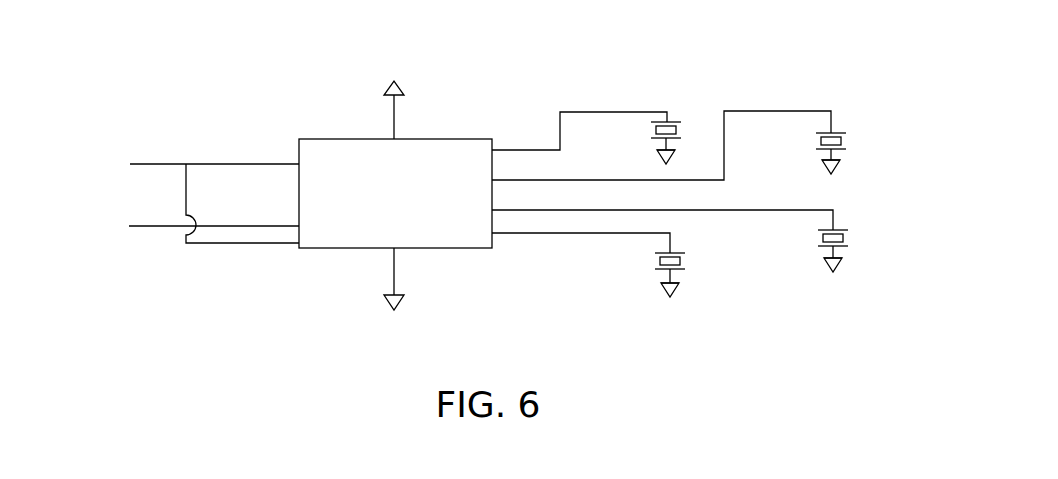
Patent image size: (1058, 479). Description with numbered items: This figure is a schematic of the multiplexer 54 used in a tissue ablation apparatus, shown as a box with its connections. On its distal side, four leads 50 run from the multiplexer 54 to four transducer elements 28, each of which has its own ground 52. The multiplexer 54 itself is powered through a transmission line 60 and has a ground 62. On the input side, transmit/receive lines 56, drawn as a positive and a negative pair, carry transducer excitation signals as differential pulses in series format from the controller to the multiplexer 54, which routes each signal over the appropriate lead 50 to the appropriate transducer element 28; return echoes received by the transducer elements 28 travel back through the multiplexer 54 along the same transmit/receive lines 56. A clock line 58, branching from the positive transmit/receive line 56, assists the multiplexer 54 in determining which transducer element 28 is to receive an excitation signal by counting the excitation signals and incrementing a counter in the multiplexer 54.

The transducer element 28 is at (692, 124).
The lead 50 is at (588, 112).
The ground 52 is at (670, 292).
The multiplexer 54 is at (452, 139).
The transmit/receive lines 56 is at (148, 164).
The clock line 58 is at (201, 245).
The transmission line 60 is at (395, 115).
The ground 62 is at (395, 266).